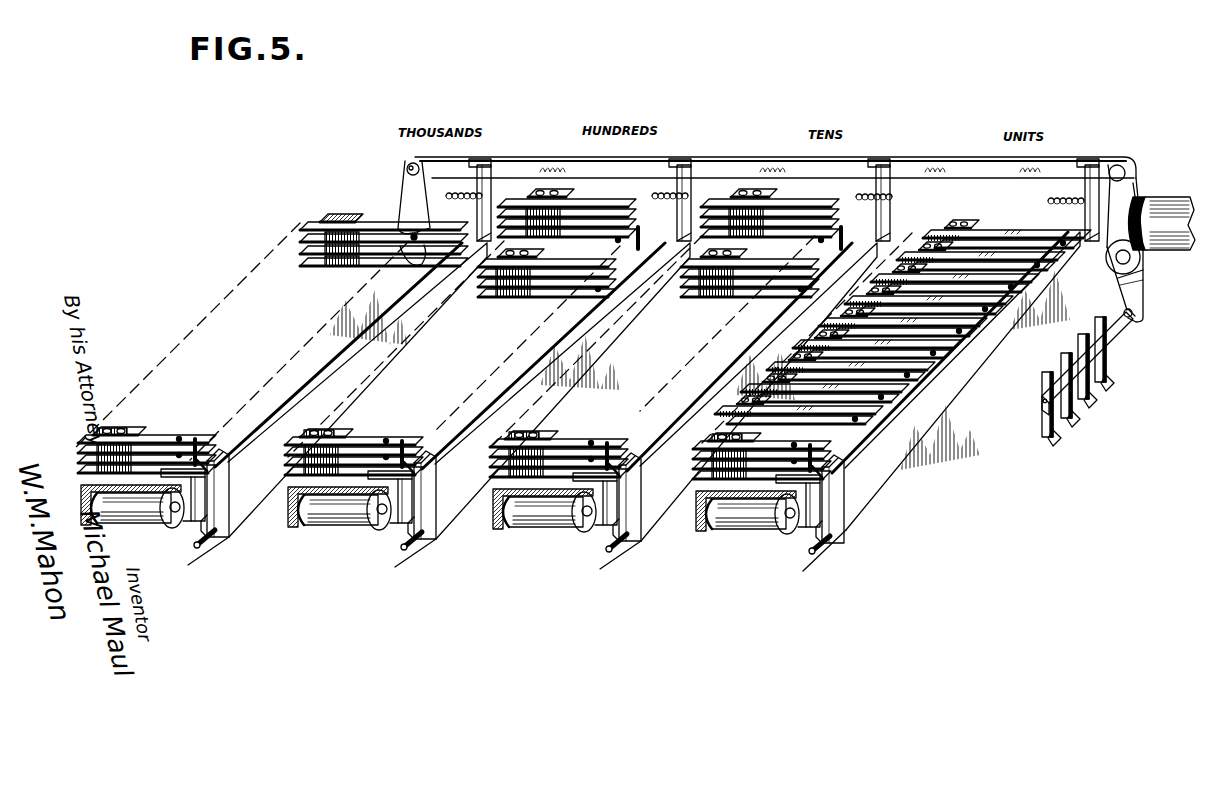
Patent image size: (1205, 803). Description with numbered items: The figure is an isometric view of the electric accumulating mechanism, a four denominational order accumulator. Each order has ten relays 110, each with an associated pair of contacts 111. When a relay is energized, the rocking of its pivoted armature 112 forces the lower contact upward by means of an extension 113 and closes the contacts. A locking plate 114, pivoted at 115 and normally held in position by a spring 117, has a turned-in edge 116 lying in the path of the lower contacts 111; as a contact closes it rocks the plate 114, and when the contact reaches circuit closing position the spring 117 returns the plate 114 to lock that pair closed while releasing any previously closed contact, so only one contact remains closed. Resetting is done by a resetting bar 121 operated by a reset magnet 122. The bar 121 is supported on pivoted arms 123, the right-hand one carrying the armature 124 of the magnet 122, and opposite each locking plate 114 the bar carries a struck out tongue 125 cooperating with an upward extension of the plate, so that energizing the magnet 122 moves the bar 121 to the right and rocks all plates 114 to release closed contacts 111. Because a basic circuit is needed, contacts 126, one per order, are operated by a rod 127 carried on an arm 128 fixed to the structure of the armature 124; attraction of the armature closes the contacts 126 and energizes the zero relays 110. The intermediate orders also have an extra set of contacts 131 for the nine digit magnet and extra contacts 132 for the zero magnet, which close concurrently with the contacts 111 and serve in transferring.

The relay 110 is at (138, 512).
The pair of contacts 111 is at (228, 482).
The armature 112 is at (212, 512).
The extension 113 is at (174, 495).
The locking plate 114 is at (276, 478).
The pivot 115 is at (208, 533).
The turned-in edge 116 is at (285, 422).
The spring 117 is at (1100, 135).
The resetting bar 121 is at (950, 162).
The reset magnet 122 is at (1161, 238).
The pivoted arm 123 is at (402, 188).
The armature of reset magnet 124 is at (1120, 208).
The struck out tongue 125 is at (488, 163).
The contacts 126 is at (1100, 348).
The rod 127 is at (1136, 311).
The arm 128 is at (1133, 279).
The extra set of contacts 131 is at (410, 430).
The extra contacts 132 is at (598, 210).